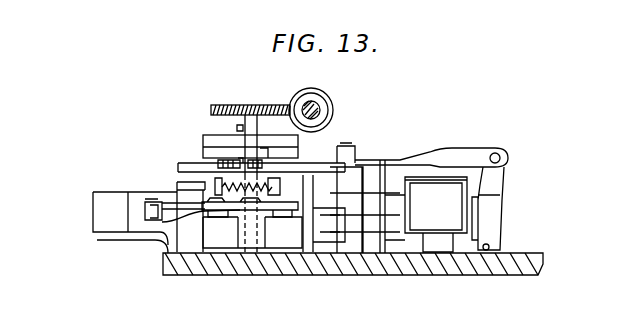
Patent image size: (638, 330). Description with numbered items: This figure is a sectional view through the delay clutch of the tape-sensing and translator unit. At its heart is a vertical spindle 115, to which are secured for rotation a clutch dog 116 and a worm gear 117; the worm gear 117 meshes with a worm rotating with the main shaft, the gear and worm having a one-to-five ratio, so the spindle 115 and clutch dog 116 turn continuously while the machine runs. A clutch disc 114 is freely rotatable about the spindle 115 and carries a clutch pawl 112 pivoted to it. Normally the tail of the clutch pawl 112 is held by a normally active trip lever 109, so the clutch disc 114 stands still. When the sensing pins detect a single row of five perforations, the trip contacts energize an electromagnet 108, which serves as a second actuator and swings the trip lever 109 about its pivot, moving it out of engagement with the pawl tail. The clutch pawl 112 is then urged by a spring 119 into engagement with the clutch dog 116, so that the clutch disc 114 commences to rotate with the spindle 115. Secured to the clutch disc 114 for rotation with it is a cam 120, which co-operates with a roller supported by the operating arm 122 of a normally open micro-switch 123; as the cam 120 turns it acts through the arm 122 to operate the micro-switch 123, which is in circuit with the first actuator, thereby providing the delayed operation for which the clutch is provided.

The electromagnet 108 is at (447, 223).
The trip lever 109 is at (355, 152).
The clutch pawl 112 is at (251, 252).
The clutch disc 114 is at (308, 165).
The vertical spindle 115 is at (252, 250).
The clutch dog 116 is at (222, 165).
The worm gear 117 is at (212, 106).
The spring 119 is at (238, 182).
The cam 120 is at (298, 182).
The operating arm 122 is at (312, 206).
The micro-switch 123 is at (397, 220).